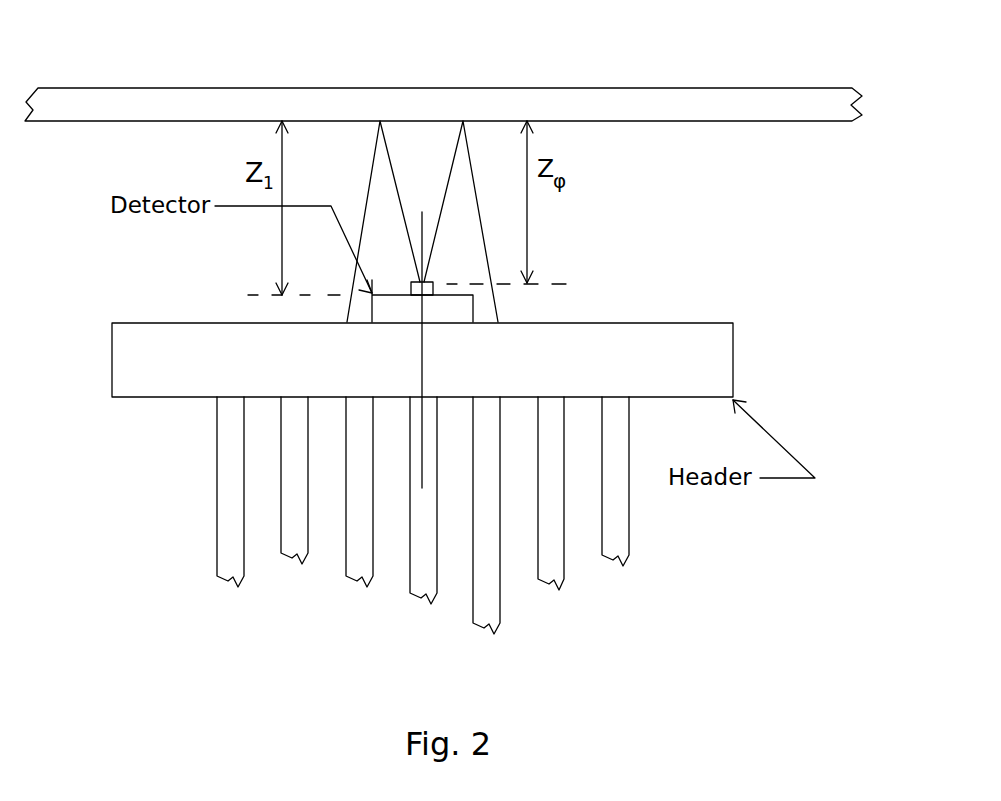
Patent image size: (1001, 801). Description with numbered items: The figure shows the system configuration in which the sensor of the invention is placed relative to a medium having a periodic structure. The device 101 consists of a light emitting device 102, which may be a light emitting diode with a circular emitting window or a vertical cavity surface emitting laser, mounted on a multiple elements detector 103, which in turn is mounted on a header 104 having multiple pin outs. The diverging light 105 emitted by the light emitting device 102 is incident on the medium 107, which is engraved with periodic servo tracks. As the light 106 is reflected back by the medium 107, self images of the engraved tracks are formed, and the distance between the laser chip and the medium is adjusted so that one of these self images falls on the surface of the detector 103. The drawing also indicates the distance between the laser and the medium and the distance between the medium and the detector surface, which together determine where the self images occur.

The device 101 is at (817, 213).
The light emitting device 102 is at (433, 282).
The multiple elements detector 103 is at (465, 308).
The header 104 is at (733, 337).
The diverging light 105 is at (438, 218).
The light 106 is at (368, 195).
The medium 107 is at (715, 88).